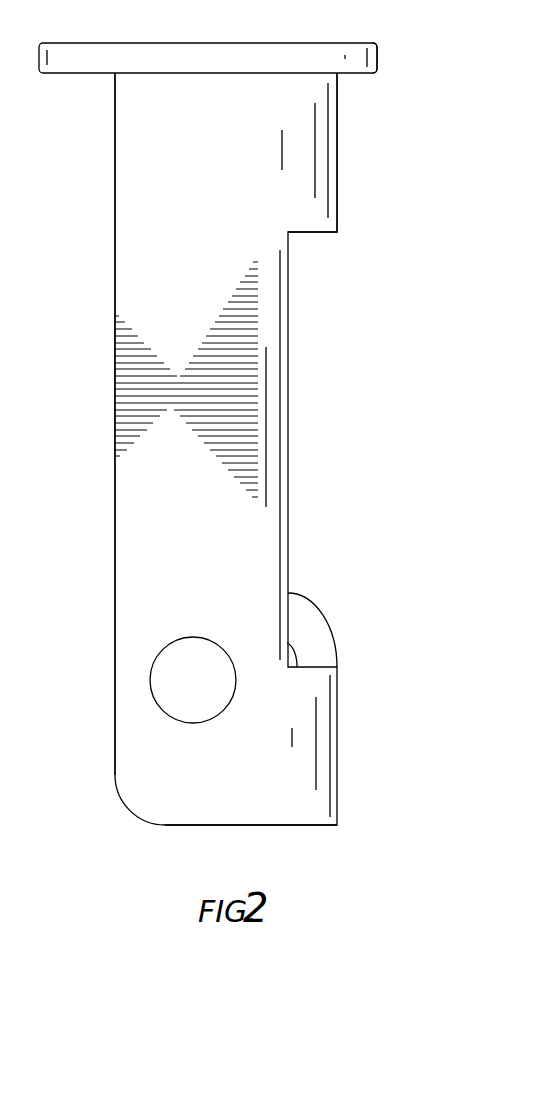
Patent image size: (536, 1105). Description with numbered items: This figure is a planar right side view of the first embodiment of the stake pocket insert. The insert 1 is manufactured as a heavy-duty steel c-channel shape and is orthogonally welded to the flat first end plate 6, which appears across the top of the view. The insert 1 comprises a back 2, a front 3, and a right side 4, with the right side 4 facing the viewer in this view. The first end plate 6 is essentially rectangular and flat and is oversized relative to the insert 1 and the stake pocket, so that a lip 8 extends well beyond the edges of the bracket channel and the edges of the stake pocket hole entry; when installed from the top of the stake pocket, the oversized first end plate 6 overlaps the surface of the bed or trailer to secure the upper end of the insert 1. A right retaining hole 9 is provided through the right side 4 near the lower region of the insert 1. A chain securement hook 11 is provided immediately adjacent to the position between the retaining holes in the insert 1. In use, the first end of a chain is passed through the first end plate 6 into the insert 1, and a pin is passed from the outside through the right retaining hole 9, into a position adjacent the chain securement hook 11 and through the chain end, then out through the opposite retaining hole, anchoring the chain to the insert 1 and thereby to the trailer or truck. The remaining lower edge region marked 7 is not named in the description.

The insert 1 is at (135, 519).
The back 2 is at (113, 195).
The front 3 is at (337, 168).
The right side 4 is at (243, 313).
The first end plate 6 is at (223, 43).
The bottom edge 7 is at (264, 826).
The lip 8 is at (372, 43).
The right retaining hole 9 is at (213, 692).
The chain securement hook 11 is at (328, 630).